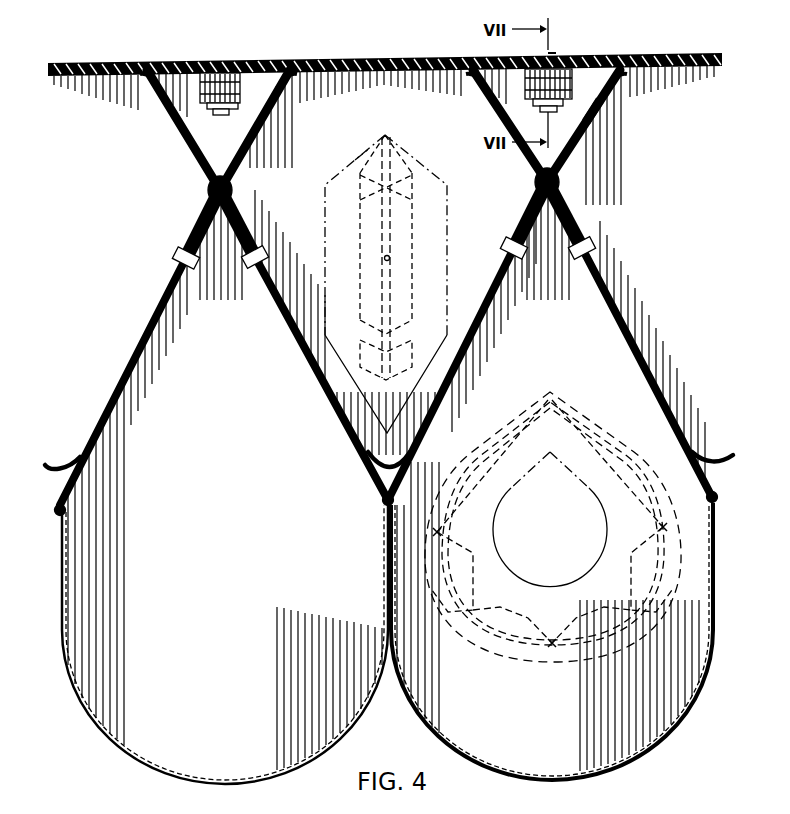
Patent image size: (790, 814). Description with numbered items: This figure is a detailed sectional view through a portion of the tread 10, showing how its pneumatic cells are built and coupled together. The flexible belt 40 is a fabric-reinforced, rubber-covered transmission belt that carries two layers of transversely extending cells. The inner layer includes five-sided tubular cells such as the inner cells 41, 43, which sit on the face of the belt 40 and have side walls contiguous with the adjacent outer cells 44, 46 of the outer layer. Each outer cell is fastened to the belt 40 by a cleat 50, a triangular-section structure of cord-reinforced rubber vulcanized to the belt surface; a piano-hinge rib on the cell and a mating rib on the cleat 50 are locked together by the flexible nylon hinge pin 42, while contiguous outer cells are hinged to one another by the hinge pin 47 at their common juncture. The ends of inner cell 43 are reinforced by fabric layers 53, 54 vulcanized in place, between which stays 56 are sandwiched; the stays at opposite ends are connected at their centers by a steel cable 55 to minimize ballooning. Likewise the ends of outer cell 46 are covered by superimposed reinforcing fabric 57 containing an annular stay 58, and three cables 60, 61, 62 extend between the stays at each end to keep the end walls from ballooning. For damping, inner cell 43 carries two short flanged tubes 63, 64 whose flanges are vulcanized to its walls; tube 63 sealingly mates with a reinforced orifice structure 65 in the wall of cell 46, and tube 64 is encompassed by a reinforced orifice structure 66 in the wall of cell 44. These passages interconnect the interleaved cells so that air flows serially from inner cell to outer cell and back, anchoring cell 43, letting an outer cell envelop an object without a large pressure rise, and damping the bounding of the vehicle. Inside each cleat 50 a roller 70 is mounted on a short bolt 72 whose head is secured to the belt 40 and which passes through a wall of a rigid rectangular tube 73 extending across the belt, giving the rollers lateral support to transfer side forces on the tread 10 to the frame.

The tread 10 is at (100, 738).
The flexible belt 40 is at (355, 58).
The inner cell 41 is at (116, 211).
The hinge pin 42 is at (212, 188).
The inner cell 43 is at (371, 123).
The outer cell 44 is at (221, 577).
The outer cell 46 is at (542, 741).
The hinge pin 47 is at (382, 503).
The cleat 50 is at (252, 143).
The reinforcing fabric layer 53 is at (365, 198).
The reinforcing fabric layer 54 is at (353, 163).
The cable 55 is at (389, 257).
The stay 56 is at (378, 233).
The reinforcing fabric 57 is at (527, 377).
The annular stay 58 is at (572, 378).
The cable 60 is at (445, 532).
The cable 61 is at (553, 647).
The cable 62 is at (660, 527).
The flanged tube 63 is at (520, 256).
The flanged tube 64 is at (247, 262).
The reinforced orifice structure 65 is at (517, 262).
The reinforced orifice structure 66 is at (262, 278).
The roller 70 is at (527, 97).
The bolt 72 is at (550, 55).
The rectangular tube 73 is at (588, 122).